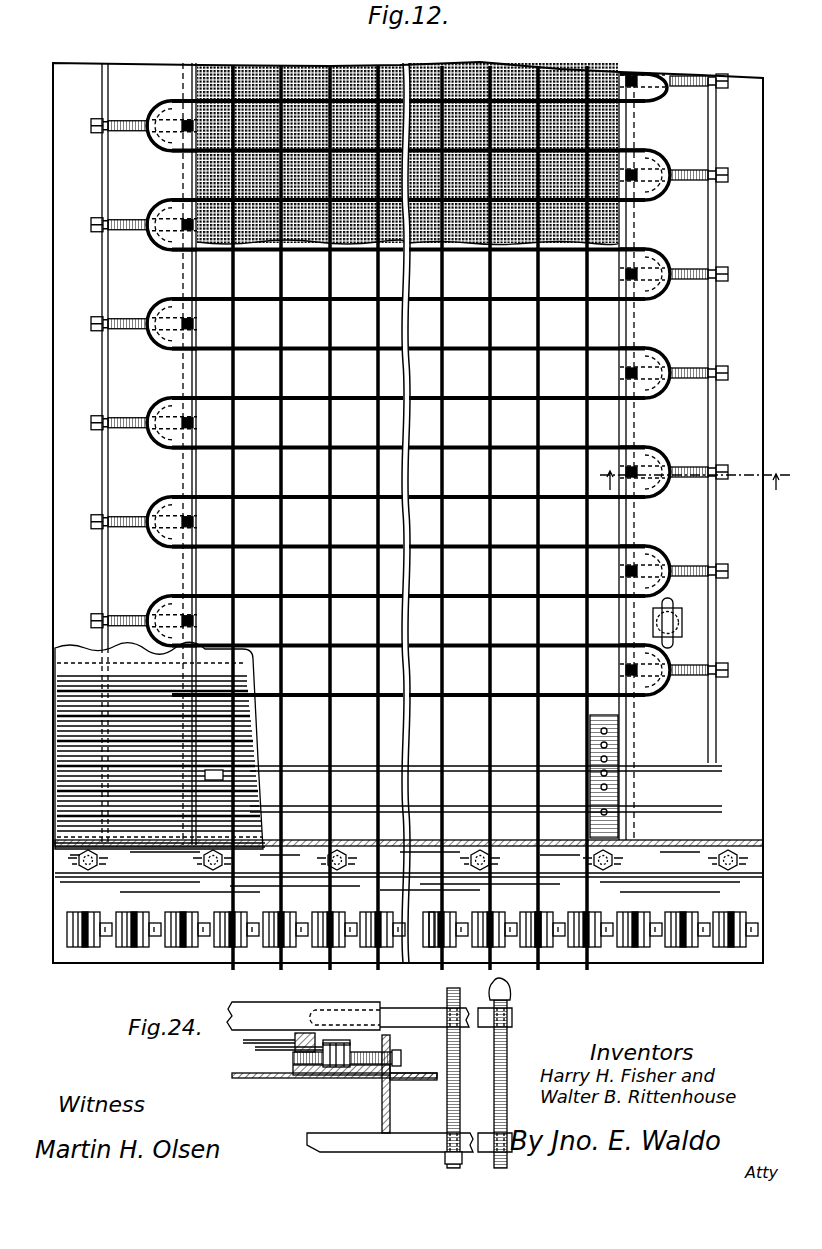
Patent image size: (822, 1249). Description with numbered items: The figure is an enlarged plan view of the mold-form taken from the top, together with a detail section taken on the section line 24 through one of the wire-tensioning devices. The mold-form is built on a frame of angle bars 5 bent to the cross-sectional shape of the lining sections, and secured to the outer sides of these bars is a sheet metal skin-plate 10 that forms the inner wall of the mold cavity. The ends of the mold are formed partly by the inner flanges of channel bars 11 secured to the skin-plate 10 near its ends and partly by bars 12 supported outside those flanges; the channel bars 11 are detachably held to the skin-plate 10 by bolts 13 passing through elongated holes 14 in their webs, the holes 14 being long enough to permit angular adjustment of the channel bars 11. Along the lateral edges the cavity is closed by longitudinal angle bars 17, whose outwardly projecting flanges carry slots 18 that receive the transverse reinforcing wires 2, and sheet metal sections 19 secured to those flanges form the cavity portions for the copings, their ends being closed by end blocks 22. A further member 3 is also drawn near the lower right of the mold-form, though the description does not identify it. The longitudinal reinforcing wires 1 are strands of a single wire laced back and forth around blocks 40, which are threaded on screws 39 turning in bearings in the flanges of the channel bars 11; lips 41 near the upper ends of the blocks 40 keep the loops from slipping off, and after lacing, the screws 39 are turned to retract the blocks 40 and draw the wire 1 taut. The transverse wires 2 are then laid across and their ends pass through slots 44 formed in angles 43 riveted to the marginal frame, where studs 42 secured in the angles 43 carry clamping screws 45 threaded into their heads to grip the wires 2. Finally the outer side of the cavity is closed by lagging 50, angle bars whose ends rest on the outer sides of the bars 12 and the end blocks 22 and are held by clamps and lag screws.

In FIG. 12, the longitudinal reinforcing wires 1 is at (347, 350).
In FIG. 24, the longitudinal reinforcing wires 1 is at (265, 1050).
In FIG. 12, the transverse reinforcing wires 2 is at (327, 621).
In FIG. 12, the bottom rod 3 is at (674, 806).
In FIG. 24, the angle bars 5 is at (392, 1109).
In FIG. 12, the skin-plate 10 is at (64, 528).
In FIG. 24, the skin-plate 10 is at (273, 1078).
In FIG. 12, the channel bars 11 is at (127, 568).
In FIG. 24, the channel bars 11 is at (368, 1077).
In FIG. 12, the bars 12 is at (183, 372).
In FIG. 24, the bars 12 is at (295, 1042).
In FIG. 12, the bolts 13 is at (682, 618).
In FIG. 12, the elongated holes 14 is at (675, 645).
In FIG. 12, the angle bars 17 is at (672, 866).
In FIG. 12, the slots 18 is at (373, 840).
In FIG. 12, the sheet metal sections 19 is at (75, 824).
In FIG. 12, the end blocks 22 is at (590, 789).
In FIG. 12, the section line 24 is at (694, 484).
In FIG. 12, the screws 39 is at (127, 318).
In FIG. 24, the screws 39 is at (394, 1053).
In FIG. 12, the blocks 40 is at (172, 244).
In FIG. 24, the blocks 40 is at (338, 1068).
In FIG. 12, the lips 41 is at (153, 212).
In FIG. 24, the lips 41 is at (350, 1043).
In FIG. 12, the studs 42 is at (583, 950).
In FIG. 12, the angles 43 is at (660, 950).
In FIG. 12, the slots 44 is at (490, 912).
In FIG. 12, the clamping screws 45 is at (542, 914).
In FIG. 12, the lagging 50 is at (75, 665).
In FIG. 24, the lagging 50 is at (306, 994).